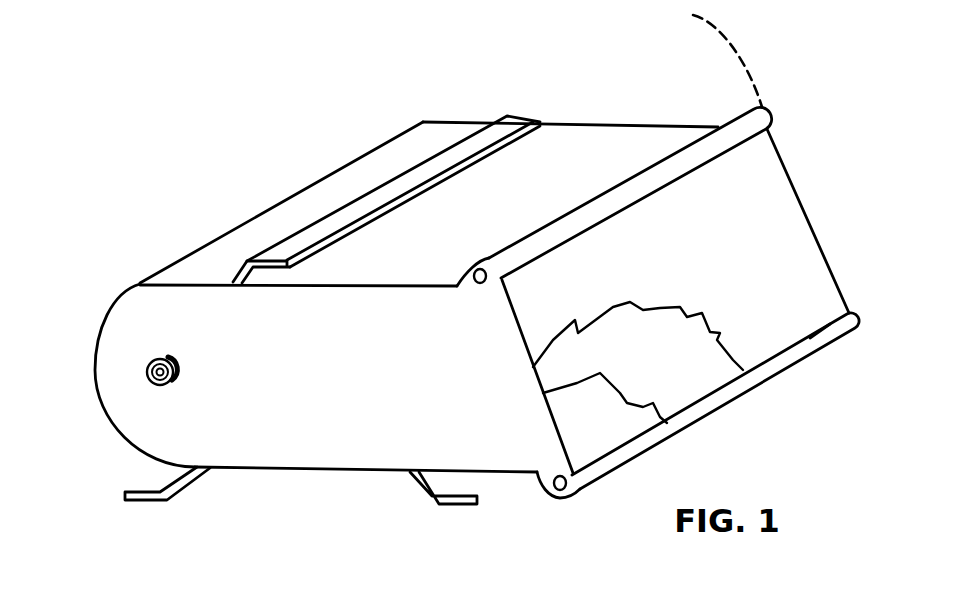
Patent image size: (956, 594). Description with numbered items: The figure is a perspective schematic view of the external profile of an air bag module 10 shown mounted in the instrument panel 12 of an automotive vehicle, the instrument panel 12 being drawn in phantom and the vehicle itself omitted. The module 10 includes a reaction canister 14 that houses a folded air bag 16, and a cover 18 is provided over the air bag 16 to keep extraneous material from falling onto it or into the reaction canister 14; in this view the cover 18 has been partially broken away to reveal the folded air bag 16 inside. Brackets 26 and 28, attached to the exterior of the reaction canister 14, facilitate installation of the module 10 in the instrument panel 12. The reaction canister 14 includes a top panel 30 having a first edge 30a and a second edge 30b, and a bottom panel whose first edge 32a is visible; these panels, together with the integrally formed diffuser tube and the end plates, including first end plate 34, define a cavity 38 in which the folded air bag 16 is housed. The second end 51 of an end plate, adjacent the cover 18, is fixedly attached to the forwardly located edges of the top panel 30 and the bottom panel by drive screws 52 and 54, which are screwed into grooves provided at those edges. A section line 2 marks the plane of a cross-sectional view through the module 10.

The section line 2- 2 is at (207, 250).
The air bag module 10 is at (126, 241).
The instrument panel 12 is at (757, 56).
The reaction canister 14 is at (350, 172).
The folded air bag 16 is at (688, 388).
The cover 18 is at (783, 335).
The bracket 26 is at (137, 490).
The bracket 28 is at (450, 503).
The top panel 30 is at (558, 134).
The first edge of top panel 30a is at (360, 288).
The second edge of top panel 30b is at (603, 126).
The first edge of bottom panel 32a is at (343, 473).
The first end plate 34 is at (252, 468).
The cavity 38 is at (628, 425).
The second end of end plate 51 is at (825, 252).
The drive screw 52 is at (474, 286).
The drive screw 54 is at (560, 500).